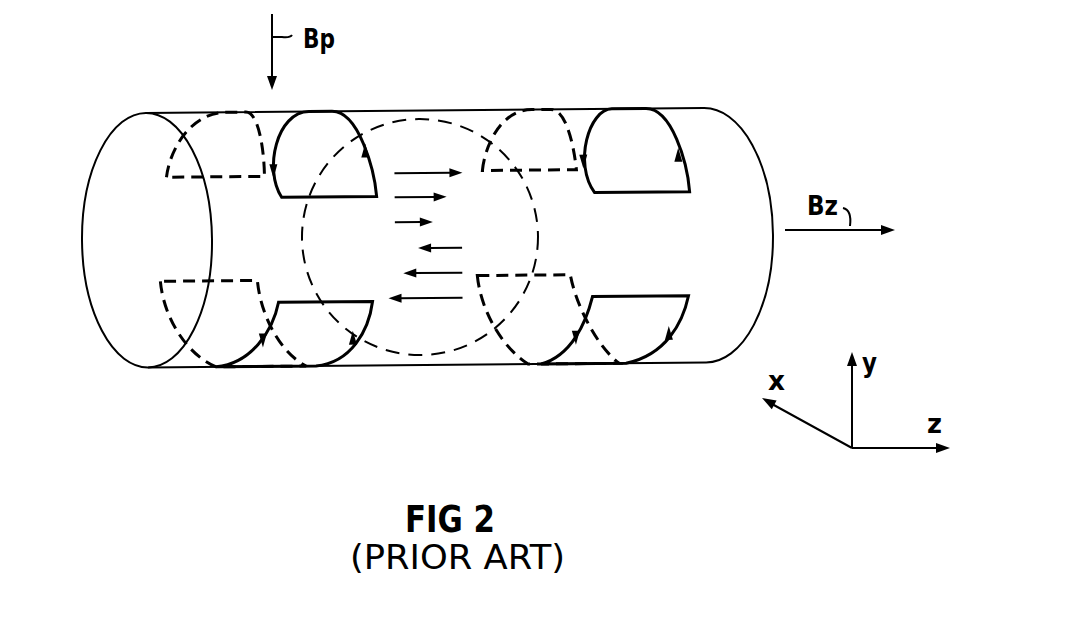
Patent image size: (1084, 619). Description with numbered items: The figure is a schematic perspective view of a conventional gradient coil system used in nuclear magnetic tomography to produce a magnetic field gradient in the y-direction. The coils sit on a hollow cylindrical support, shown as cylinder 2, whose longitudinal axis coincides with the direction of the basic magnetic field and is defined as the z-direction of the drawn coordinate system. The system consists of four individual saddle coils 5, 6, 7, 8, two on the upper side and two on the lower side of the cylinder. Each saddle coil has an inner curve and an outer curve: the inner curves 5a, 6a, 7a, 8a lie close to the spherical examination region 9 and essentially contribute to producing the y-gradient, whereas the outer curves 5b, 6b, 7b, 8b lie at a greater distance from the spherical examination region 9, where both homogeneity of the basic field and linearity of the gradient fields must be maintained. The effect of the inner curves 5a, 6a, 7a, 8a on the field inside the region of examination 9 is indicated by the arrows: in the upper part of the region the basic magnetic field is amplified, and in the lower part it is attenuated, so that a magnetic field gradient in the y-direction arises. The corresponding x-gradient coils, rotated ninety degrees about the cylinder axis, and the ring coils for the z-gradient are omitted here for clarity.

The cylindrical coil carrier 2 is at (733, 162).
The saddle coil 5 is at (279, 132).
The inner curve 5a is at (362, 160).
The outer curve 5b is at (262, 130).
The saddle coil 6 is at (600, 128).
The inner curve 6a is at (563, 120).
The outer curve 6b is at (682, 128).
The saddle coil 7 is at (270, 349).
The inner curve 7a is at (352, 368).
The outer curve 7b is at (240, 397).
The saddle coil 8 is at (589, 343).
The inner curve 8a is at (577, 393).
The outer curve 8b is at (665, 343).
The spherical examination region 9 is at (433, 117).